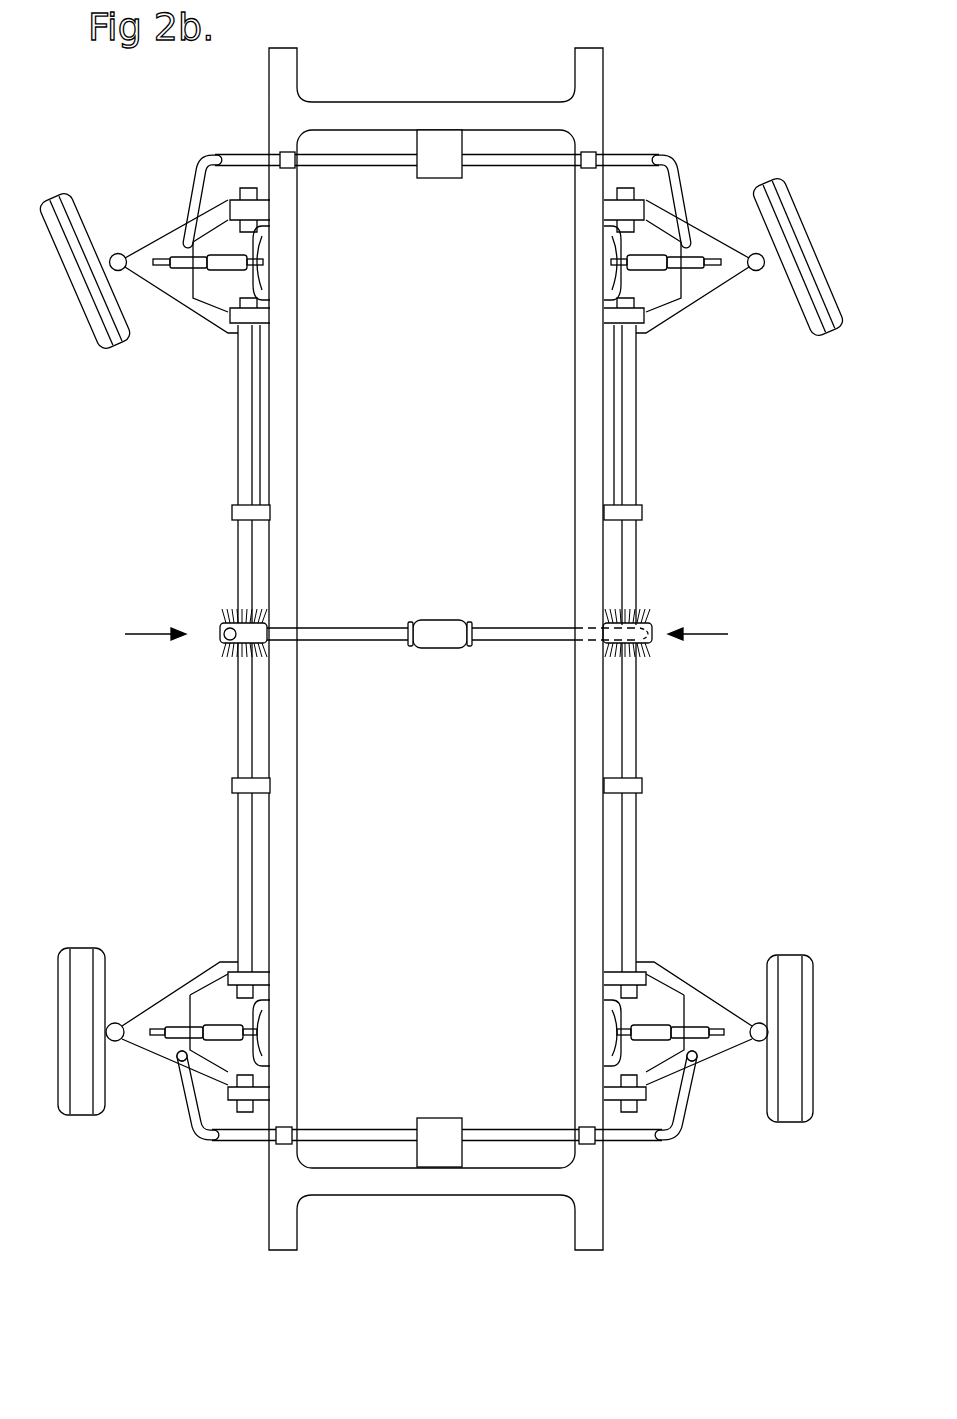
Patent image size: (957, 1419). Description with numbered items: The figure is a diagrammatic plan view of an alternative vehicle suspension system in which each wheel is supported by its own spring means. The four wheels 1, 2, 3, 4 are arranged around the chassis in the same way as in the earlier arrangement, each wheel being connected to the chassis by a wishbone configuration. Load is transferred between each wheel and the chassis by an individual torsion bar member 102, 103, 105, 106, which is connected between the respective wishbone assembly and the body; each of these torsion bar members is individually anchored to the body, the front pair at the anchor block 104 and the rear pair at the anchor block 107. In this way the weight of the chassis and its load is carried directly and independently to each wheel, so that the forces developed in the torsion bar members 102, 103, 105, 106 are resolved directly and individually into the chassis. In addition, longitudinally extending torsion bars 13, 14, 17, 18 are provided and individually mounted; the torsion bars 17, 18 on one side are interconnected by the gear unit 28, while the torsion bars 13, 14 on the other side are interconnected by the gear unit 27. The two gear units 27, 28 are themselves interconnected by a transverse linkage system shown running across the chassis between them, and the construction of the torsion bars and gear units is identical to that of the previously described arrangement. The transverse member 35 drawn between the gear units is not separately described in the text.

The wheel 1 is at (63, 212).
The wheel 2 is at (772, 210).
The wheel 3 is at (792, 965).
The wheel 4 is at (82, 958).
The torsion bar 13 is at (635, 490).
The torsion bar 14 is at (640, 745).
The torsion bar 17 is at (238, 833).
The torsion bar 18 is at (238, 540).
The gear unit 27 is at (717, 629).
The gear unit 28 is at (134, 629).
The transverse torsion bar 35 is at (347, 625).
The torsion bar member 102 is at (233, 153).
The torsion bar member 103 is at (643, 153).
The anchor block 104 is at (438, 178).
The torsion bar member 105 is at (645, 1147).
The torsion bar member 106 is at (230, 1145).
The anchor block 107 is at (438, 1118).